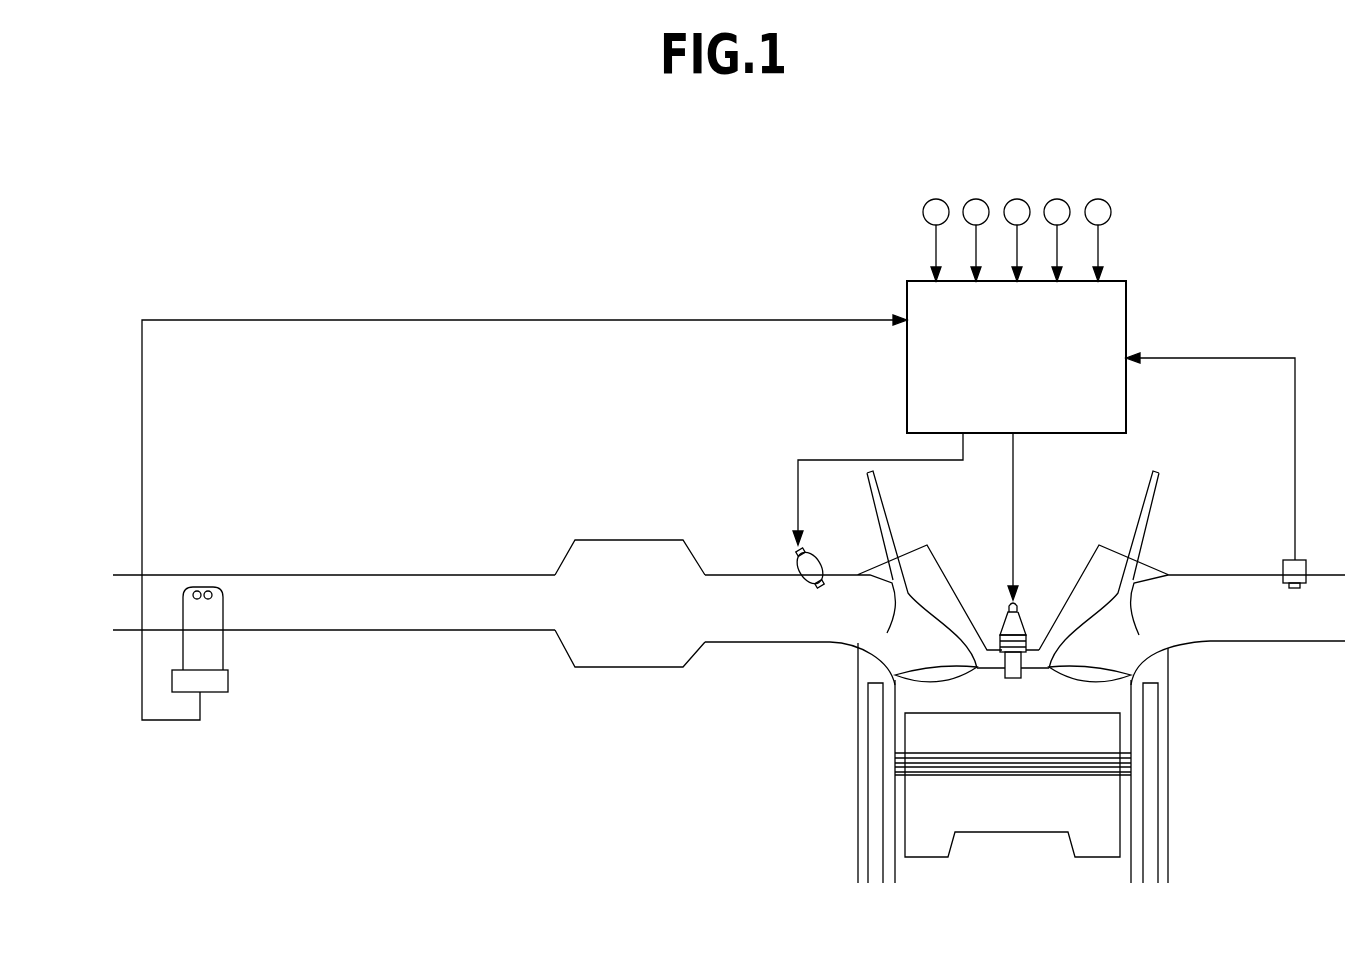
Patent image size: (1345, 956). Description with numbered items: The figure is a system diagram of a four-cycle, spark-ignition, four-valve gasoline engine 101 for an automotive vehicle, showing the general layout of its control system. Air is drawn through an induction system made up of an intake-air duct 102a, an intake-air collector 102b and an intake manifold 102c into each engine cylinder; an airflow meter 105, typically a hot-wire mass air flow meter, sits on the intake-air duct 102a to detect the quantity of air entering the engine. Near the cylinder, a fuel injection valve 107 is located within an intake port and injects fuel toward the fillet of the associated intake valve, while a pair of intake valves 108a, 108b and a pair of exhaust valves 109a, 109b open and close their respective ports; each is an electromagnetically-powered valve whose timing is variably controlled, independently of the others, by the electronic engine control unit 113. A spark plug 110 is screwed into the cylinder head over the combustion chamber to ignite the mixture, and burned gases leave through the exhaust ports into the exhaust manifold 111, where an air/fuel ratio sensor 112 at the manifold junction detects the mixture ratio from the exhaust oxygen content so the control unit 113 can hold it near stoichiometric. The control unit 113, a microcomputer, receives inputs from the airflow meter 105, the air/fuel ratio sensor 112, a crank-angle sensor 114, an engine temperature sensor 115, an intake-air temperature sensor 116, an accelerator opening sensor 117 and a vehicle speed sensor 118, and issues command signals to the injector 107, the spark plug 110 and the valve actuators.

The internal combustion engine 101 is at (838, 778).
The intake-air duct 102a is at (455, 575).
The intake-air collector 102b is at (627, 670).
The intake manifold 102c is at (770, 642).
The airflow meter 105 is at (228, 677).
The fuel injection valve 107 is at (796, 562).
The intake valve 108a is at (855, 536).
The intake valve 108b is at (882, 490).
The exhaust valve 109a is at (1160, 554).
The exhaust valve 109b is at (1104, 576).
The spark plug 110 is at (1018, 606).
The exhaust manifold 111 is at (1267, 642).
The air/fuel ratio sensor 112 is at (1284, 558).
The electronic engine control unit 113 is at (1063, 435).
The crank-angle sensor 114 is at (935, 198).
The engine temperature sensor 115 is at (976, 198).
The intake-air temperature sensor 116 is at (1017, 198).
The accelerator opening sensor 117 is at (1057, 198).
The vehicle speed sensor 118 is at (1098, 198).